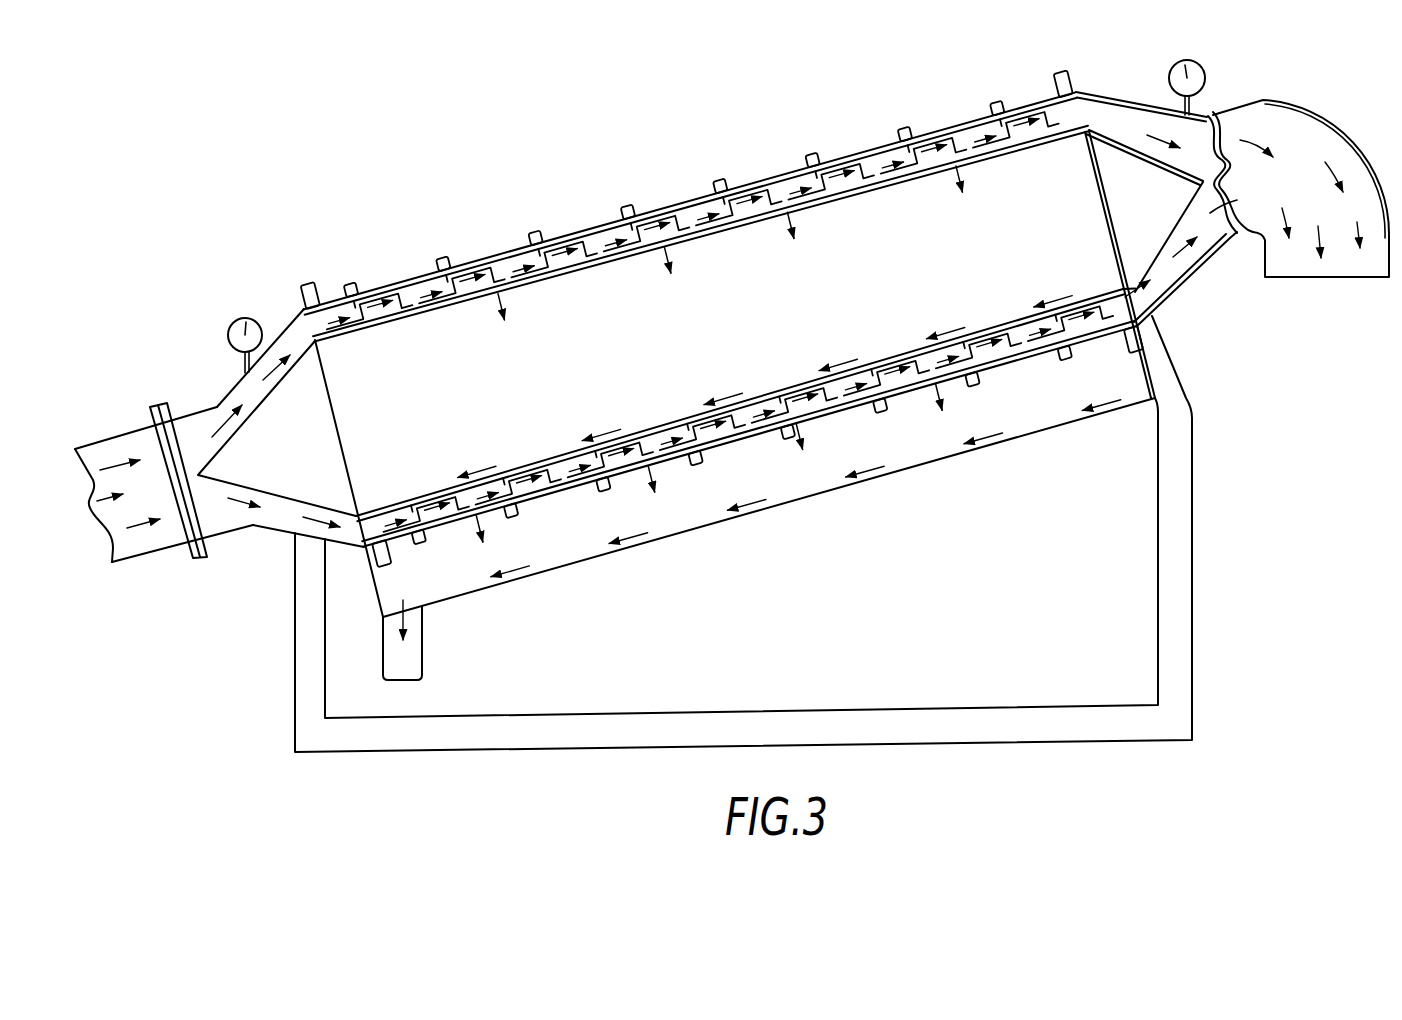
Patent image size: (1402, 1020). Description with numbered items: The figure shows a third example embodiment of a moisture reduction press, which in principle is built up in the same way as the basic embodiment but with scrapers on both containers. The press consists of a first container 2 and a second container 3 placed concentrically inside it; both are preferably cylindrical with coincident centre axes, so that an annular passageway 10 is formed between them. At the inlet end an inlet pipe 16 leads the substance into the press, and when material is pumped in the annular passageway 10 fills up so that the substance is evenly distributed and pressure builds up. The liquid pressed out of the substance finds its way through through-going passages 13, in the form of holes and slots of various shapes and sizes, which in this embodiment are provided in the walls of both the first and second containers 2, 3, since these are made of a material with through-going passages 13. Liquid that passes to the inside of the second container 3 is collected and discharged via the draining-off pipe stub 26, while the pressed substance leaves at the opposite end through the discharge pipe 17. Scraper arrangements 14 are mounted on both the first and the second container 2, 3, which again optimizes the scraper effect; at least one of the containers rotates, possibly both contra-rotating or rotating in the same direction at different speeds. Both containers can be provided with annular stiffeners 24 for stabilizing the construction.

The first container 2 is at (497, 256).
The second container 3 is at (420, 313).
The annular passageway 10 is at (982, 132).
The through-going passages 13 is at (500, 293).
The scraper arrangements 14 is at (813, 190).
The inlet pipe 16 is at (140, 540).
The discharge pipe 17 is at (1297, 150).
The annular stiffeners 24 is at (640, 200).
The draining-off pipe stub 26 is at (408, 657).